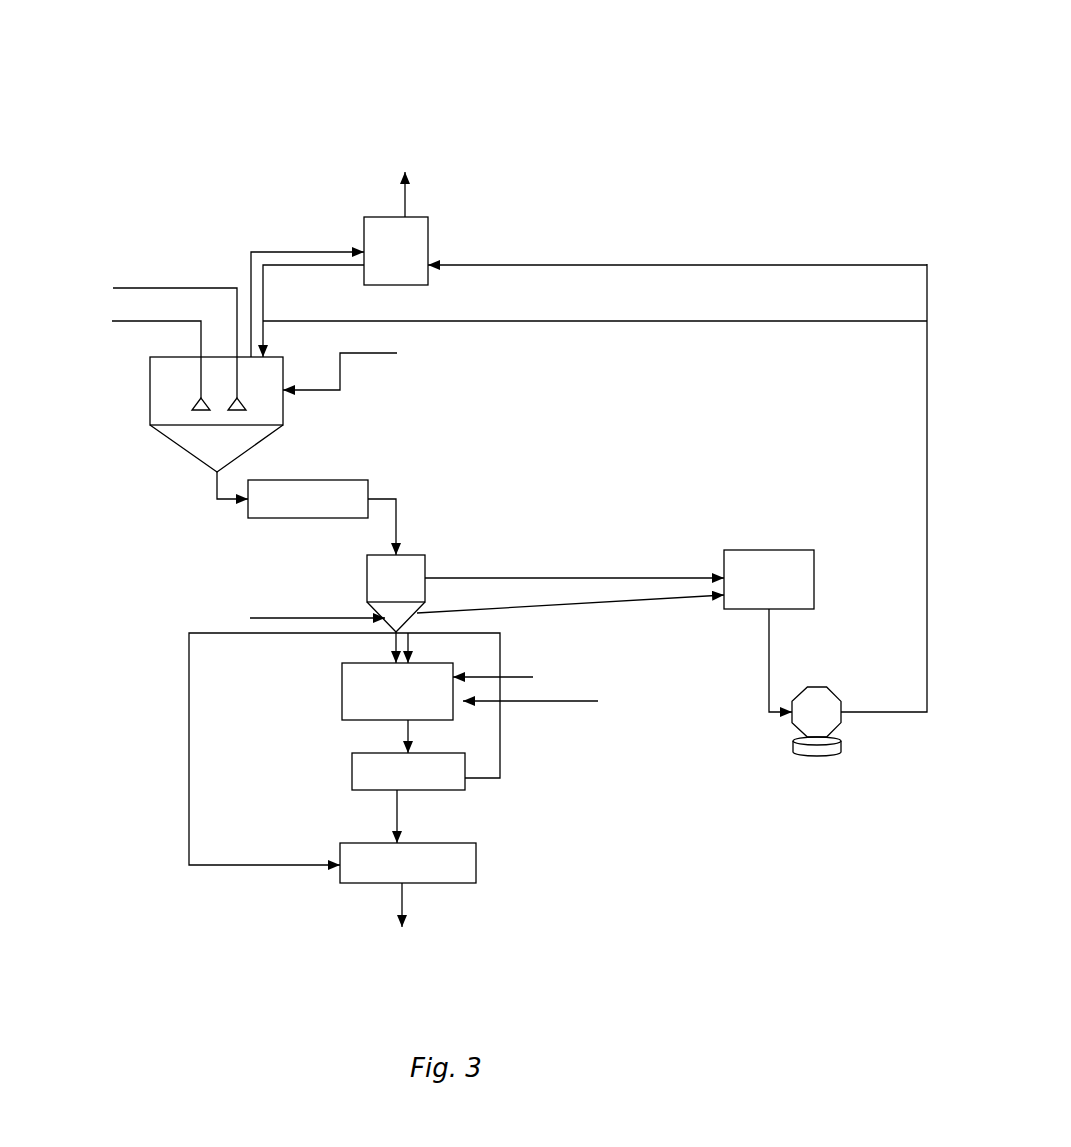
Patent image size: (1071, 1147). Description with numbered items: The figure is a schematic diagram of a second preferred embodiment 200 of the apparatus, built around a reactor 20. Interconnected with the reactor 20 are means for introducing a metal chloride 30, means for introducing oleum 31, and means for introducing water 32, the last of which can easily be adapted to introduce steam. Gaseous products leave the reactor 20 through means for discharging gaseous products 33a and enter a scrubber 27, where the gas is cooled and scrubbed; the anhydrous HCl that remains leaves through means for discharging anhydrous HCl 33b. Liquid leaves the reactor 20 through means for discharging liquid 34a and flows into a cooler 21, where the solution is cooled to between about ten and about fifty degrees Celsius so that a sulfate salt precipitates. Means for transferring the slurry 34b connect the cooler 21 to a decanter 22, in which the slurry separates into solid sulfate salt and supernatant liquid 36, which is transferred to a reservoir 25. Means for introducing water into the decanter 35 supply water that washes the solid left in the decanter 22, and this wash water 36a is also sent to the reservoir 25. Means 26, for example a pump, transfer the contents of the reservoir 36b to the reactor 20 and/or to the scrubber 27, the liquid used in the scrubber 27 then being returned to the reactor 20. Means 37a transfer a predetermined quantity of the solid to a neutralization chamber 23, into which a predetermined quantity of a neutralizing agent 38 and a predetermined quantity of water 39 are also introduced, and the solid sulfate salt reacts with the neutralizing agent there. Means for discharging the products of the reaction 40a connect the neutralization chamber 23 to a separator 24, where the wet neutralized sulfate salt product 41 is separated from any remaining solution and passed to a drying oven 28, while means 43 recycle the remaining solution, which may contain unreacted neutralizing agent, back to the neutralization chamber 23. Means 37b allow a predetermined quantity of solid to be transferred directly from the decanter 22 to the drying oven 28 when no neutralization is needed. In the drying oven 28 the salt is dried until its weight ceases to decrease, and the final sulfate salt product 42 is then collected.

The preferred embodiment 200 is at (180, 115).
The reactor 20 is at (162, 388).
The cooler 21 is at (322, 497).
The decanter 22 is at (373, 578).
The neutralization chamber 23 is at (357, 683).
The separator 24 is at (358, 770).
The reservoir 25 is at (767, 566).
The means for transferring the contents of the reservoir 26 is at (827, 717).
The scrubber 27 is at (384, 238).
The drying oven 28 is at (448, 852).
The means for introducing a metal chloride 30 is at (362, 364).
The means for introducing oleum 31 is at (162, 341).
The means for introducing water 32 is at (140, 358).
The means for discharging gaseous products 33a is at (307, 289).
The means for discharging anhydrous HCl 33b is at (417, 177).
The means for discharging liquid from the reactor 34a is at (220, 502).
The means for transferring the slurry 34b is at (400, 520).
The means for introducing water into the decanter 35 is at (305, 608).
The supernatant liquid 36 is at (574, 561).
The wash water 36a is at (570, 623).
The contents of the reservoir 36b is at (595, 465).
The means for transferring solid to the neutralization chamber 37a is at (396, 640).
The means for transferring solid directly to the drying oven 37b is at (189, 818).
The neutralizing agent 38 is at (516, 681).
The water 39 is at (553, 709).
The means for discharging the products of the reaction 40a is at (362, 735).
The neutralized sulfate salt product 41 is at (370, 816).
The final sulfate salt product 42 is at (396, 926).
The means for recycling the solution 43 is at (478, 780).